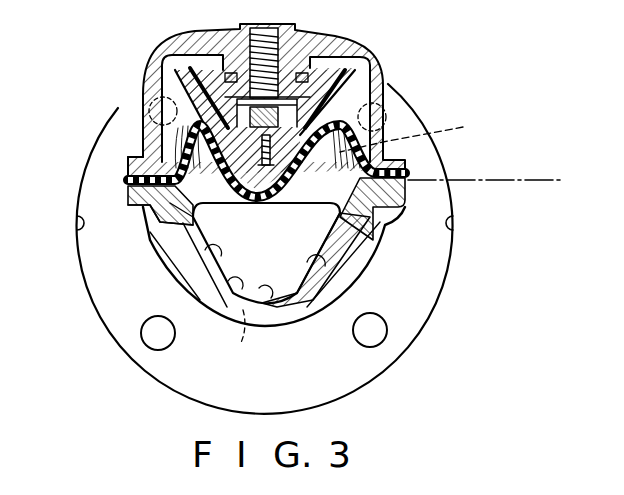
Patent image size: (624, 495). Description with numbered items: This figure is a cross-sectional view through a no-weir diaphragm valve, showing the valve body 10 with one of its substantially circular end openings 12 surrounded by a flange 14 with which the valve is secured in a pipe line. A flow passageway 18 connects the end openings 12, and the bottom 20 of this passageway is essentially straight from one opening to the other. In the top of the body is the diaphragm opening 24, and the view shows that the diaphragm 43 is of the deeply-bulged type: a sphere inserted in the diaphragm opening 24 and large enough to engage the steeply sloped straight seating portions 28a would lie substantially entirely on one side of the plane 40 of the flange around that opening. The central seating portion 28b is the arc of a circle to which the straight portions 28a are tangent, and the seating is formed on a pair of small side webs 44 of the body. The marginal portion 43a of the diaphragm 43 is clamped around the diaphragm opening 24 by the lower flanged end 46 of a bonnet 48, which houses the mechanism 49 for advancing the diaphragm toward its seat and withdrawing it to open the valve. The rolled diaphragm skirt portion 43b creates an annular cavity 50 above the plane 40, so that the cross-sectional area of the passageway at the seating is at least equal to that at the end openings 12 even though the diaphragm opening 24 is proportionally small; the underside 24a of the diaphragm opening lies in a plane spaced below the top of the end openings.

The valve body 10 is at (362, 292).
The end opening 12 is at (414, 133).
The flange 14 is at (97, 141).
The flow passageway 18 is at (308, 240).
The bottom of the passageway 20 is at (243, 327).
The diaphragm opening 24 is at (403, 157).
The underside of the diaphragm opening 24a is at (280, 203).
The straight seating portion 28a is at (353, 277).
The central seating portion 28b is at (220, 290).
The plane of the flange 40 is at (507, 180).
The diaphragm 43 is at (230, 189).
The marginal portion of the diaphragm 43a is at (128, 179).
The rolled diaphragm skirt portion 43b is at (147, 72).
The side web 44 is at (350, 255).
The lower flanged end of the bonnet 46 is at (128, 157).
The bonnet 48 is at (385, 68).
The mechanism for advancing and withdrawing the diaphragm 49 is at (206, 62).
The annular cavity 50 is at (133, 187).